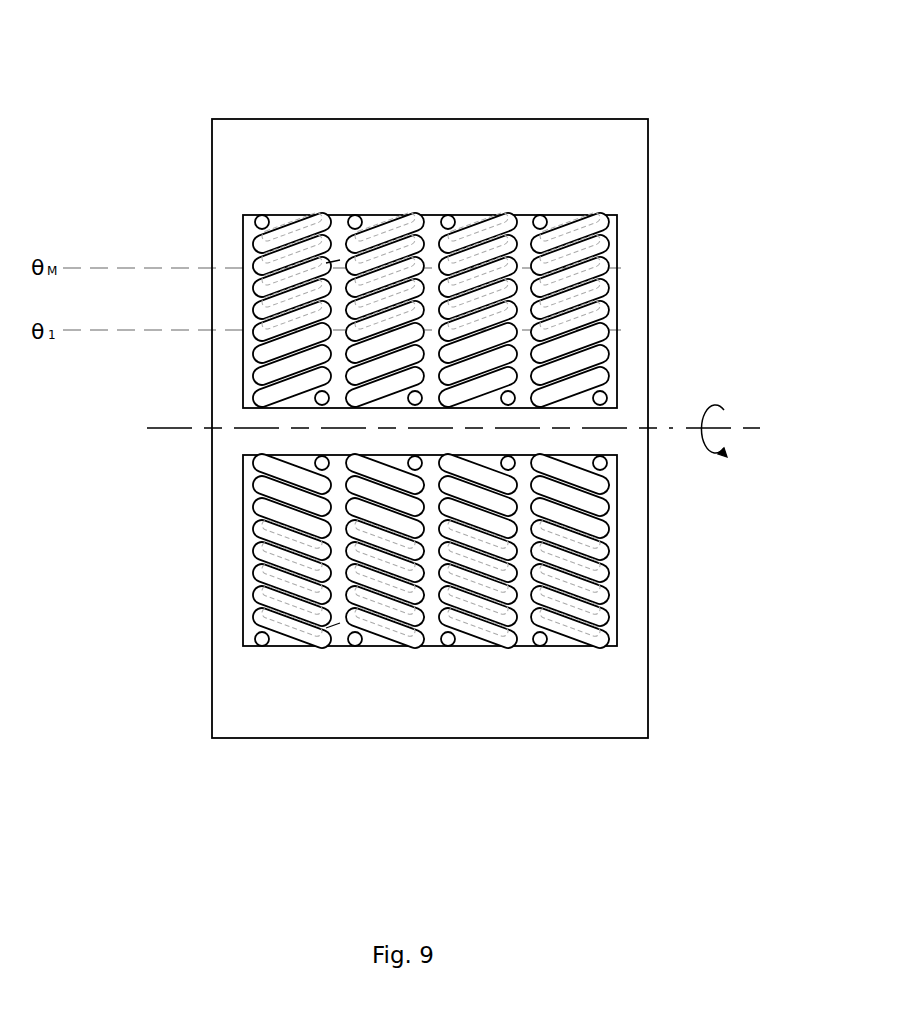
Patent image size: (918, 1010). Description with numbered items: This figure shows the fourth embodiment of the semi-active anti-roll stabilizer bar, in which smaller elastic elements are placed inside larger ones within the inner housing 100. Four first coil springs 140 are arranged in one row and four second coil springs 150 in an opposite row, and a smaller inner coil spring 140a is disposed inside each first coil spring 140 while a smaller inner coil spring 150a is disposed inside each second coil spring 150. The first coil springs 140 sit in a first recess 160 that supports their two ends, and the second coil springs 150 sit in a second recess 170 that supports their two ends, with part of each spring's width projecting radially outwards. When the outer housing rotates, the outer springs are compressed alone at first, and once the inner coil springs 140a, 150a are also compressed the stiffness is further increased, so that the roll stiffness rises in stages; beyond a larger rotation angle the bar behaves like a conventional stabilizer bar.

The inner housing 100 is at (634, 272).
The first coil spring 140 is at (262, 215).
The inner coil spring 140a is at (282, 255).
The second coil spring 150 is at (265, 646).
The inner coil spring 150a is at (288, 623).
The first recess 160 is at (334, 258).
The second recess 170 is at (338, 646).